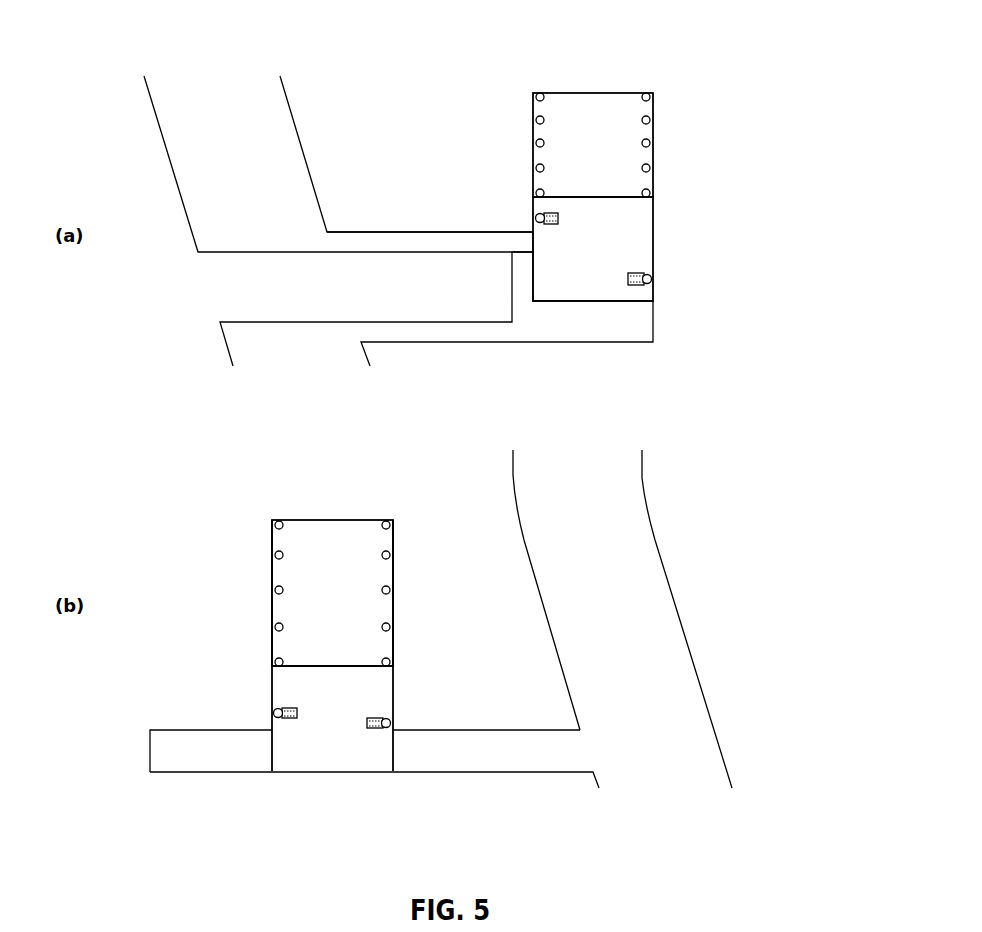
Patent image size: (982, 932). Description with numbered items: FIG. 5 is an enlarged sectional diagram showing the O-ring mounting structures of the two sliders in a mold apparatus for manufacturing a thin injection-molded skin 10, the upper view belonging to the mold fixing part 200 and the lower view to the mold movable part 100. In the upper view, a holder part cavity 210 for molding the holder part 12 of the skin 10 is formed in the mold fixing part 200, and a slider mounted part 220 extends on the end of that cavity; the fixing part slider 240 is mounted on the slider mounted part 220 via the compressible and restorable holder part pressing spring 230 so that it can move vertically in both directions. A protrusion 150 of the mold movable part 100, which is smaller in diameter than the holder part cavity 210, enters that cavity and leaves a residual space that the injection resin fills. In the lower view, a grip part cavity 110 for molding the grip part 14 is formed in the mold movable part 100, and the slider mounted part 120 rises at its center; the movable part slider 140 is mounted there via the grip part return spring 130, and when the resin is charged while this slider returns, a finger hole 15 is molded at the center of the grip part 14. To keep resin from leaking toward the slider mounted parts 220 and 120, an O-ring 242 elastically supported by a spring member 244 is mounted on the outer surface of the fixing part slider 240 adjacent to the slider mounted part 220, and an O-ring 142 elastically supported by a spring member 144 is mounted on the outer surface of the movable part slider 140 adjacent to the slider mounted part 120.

The skin 10 is at (183, 148).
The holder part 12 is at (602, 327).
The grip part 14 is at (505, 753).
The finger hole 15 is at (390, 748).
The mold movable part 100 is at (155, 295).
The grip part cavity 110 is at (173, 768).
The slider mounted part 120 is at (322, 535).
The grip part return spring 130 is at (277, 555).
The movable part slider 140 is at (335, 738).
The O-ring 142 is at (273, 713).
The spring member 144 is at (297, 718).
The protrusion 150 is at (393, 300).
The mold fixing part 200 is at (707, 553).
The holder part cavity 210 is at (440, 252).
The slider mounted part 220 is at (612, 120).
The holder part pressing spring 230 is at (647, 145).
The fixing part slider 240 is at (620, 242).
The O-ring 242 is at (650, 288).
The spring member 244 is at (645, 284).